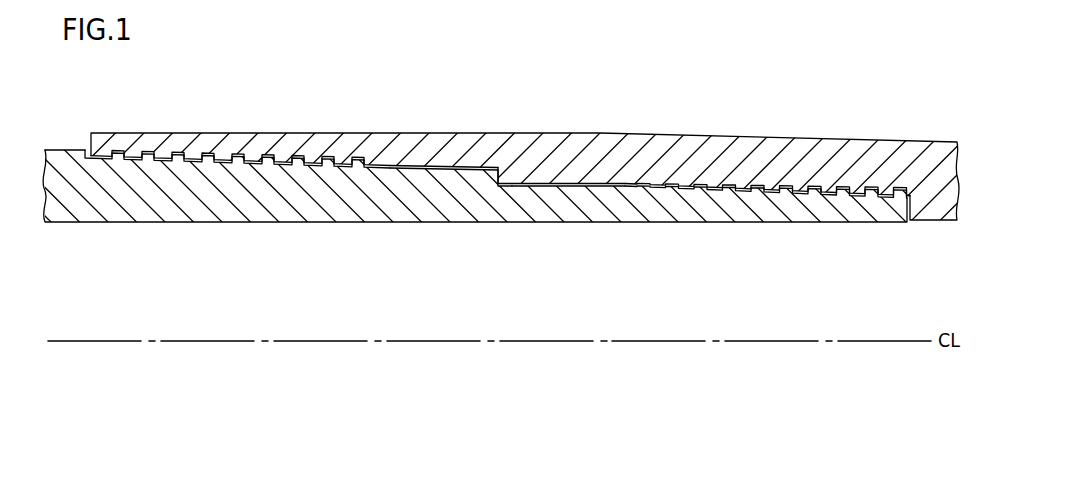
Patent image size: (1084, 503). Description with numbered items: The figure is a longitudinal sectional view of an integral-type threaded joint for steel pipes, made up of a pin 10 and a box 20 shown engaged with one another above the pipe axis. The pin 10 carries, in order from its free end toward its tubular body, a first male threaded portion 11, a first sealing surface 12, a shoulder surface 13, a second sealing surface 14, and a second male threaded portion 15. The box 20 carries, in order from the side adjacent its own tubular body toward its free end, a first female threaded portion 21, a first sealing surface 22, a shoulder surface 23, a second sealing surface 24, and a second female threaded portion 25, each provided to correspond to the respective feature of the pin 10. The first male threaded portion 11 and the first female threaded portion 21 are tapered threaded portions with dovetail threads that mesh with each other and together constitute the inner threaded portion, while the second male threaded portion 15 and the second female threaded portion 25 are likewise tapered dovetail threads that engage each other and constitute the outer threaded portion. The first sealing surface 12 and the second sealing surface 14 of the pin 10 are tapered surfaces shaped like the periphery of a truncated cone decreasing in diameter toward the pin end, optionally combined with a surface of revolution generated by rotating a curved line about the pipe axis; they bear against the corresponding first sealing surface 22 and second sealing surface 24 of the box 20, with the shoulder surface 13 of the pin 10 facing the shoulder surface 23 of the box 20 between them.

The pin 10 is at (135, 224).
The first male threaded portion 11 is at (785, 193).
The first sealing surface 12 is at (610, 187).
The shoulder surface 13 is at (499, 173).
The second sealing surface 14 is at (386, 172).
The second male threaded portion 15 is at (243, 160).
The box 20 is at (878, 133).
The first female threaded portion 21 is at (800, 190).
The first sealing surface 22 is at (608, 185).
The shoulder surface 23 is at (506, 182).
The second sealing surface 24 is at (396, 165).
The second female threaded portion 25 is at (225, 157).